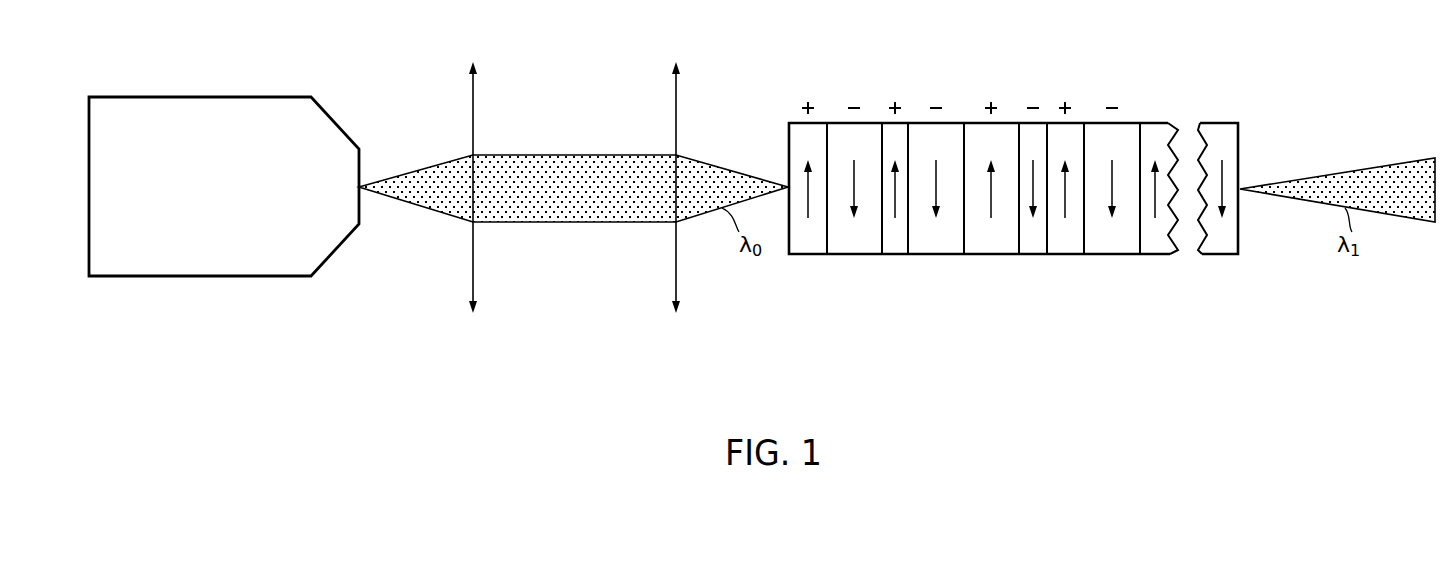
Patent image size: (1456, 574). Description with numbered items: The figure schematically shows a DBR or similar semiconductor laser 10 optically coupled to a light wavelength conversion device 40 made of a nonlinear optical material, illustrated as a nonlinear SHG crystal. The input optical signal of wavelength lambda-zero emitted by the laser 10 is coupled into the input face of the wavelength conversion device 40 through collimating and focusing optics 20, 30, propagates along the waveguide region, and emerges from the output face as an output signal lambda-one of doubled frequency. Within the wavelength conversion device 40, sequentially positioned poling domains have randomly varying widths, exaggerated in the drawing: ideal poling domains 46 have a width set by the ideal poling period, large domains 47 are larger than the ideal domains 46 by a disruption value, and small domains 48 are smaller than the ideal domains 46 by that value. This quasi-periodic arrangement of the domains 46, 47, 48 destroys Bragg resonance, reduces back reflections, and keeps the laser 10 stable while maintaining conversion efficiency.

The laser 10 is at (215, 277).
The collimating and focusing optics 20 is at (473, 110).
The collimating and focusing optics 30 is at (676, 110).
The light wavelength conversion device 40 is at (793, 118).
The ideal poling domains 46 is at (807, 255).
The large domains 47 is at (851, 255).
The small domains 48 is at (893, 255).